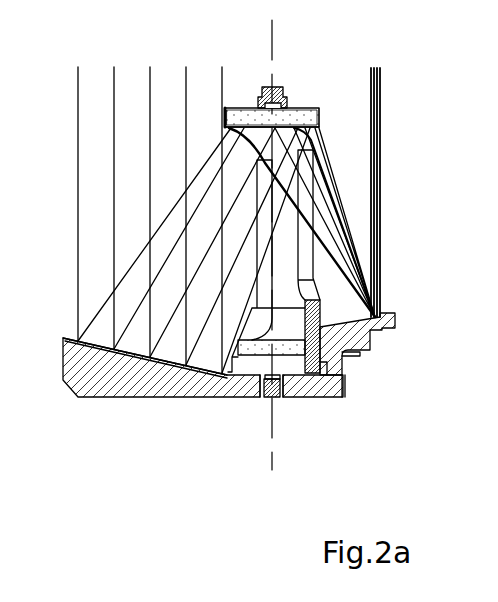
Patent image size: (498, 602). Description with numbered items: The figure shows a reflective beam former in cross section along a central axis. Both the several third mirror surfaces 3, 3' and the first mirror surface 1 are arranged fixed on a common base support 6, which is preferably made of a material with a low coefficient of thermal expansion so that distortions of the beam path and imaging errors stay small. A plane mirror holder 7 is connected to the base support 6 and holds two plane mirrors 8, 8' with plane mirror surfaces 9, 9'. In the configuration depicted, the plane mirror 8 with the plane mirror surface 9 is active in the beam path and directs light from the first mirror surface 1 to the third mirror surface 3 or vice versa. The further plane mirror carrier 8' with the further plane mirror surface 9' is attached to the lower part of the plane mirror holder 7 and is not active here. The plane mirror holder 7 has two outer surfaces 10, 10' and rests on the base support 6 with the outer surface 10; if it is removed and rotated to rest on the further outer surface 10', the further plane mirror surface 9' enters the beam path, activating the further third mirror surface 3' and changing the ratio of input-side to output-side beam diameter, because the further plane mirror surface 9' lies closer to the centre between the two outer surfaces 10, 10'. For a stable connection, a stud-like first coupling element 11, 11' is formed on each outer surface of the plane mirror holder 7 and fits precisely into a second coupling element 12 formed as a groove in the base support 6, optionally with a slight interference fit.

The first mirror surface 1 is at (105, 342).
The base support 6 is at (107, 382).
The third mirror surface 3 is at (326, 267).
The further third mirror surface 3' is at (400, 192).
The plane mirror holder 7 is at (343, 357).
The plane mirror 8 is at (324, 120).
The further plane mirror carrier 8' is at (380, 395).
The plane mirror surface 9 is at (324, 150).
The further plane mirror surface 9' is at (364, 225).
The outer surface 10 is at (307, 386).
The further outer surface 10' is at (348, 89).
The first coupling element 11 is at (253, 423).
The first coupling element 11' is at (248, 68).
The second coupling element 12 is at (282, 390).